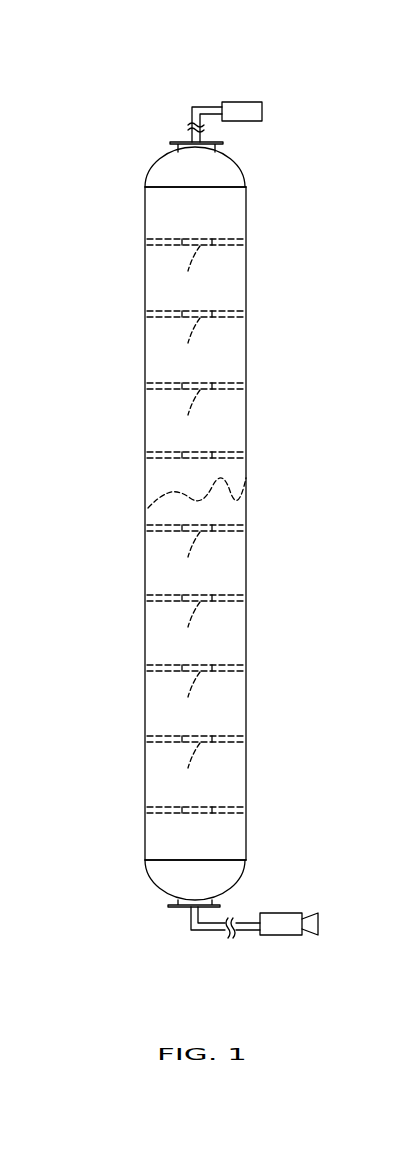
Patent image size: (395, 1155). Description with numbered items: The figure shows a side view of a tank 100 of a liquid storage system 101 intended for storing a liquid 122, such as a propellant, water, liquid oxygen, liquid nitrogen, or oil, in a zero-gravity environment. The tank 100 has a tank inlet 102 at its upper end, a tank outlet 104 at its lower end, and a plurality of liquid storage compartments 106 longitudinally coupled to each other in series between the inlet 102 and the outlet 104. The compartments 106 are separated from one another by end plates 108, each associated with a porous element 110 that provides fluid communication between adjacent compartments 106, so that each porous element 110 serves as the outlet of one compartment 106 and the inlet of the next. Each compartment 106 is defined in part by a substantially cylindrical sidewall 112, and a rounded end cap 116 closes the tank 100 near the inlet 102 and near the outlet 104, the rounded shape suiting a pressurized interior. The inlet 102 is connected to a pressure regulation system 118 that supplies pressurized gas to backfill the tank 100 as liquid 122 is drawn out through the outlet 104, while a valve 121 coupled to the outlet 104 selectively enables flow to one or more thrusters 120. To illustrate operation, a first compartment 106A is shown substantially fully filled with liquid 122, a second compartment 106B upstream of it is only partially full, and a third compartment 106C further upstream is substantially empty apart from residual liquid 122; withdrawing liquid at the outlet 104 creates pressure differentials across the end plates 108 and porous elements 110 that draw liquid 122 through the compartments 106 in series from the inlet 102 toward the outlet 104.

The tank 100 is at (96, 140).
The liquid storage system 101 is at (260, 68).
The tank inlet 102 is at (168, 132).
The tank outlet 104 is at (160, 930).
The liquid storage compartments 106 is at (162, 217).
The first compartment 106A is at (162, 548).
The second compartment 106B is at (162, 470).
The third compartment 106C is at (237, 417).
The end plates 108 is at (270, 824).
The porous elements 110 is at (207, 805).
The sidewall 112 is at (247, 216).
The end cap 116 is at (158, 178).
The pressure regulation system 118 is at (266, 143).
The thrusters 120 is at (320, 893).
The valve 121 is at (282, 928).
The liquid 122 is at (247, 503).